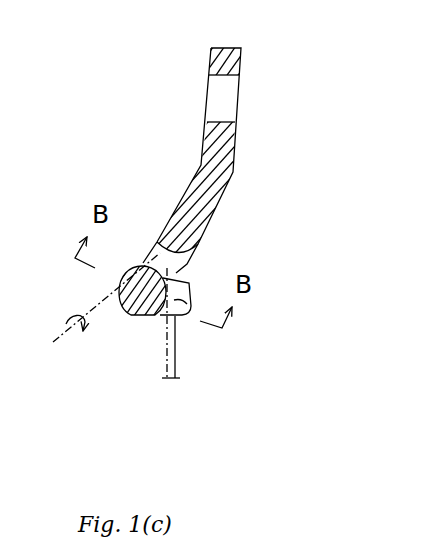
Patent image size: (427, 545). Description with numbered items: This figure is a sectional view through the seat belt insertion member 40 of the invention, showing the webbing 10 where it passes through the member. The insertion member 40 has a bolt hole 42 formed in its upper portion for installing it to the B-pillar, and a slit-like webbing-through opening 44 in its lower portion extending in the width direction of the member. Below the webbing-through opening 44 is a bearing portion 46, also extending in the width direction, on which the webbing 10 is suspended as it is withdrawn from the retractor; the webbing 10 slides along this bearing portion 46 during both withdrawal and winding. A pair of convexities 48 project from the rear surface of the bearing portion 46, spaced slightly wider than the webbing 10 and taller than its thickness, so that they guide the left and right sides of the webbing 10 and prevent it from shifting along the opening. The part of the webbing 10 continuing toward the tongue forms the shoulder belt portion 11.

The webbing 10 is at (180, 367).
The shoulder belt portion 11 is at (53, 342).
The insertion member 40 is at (200, 167).
The bolt hole 42 is at (227, 100).
The webbing-through opening 44 is at (190, 263).
The bearing portion 46 is at (127, 310).
The convexities 48 is at (190, 310).